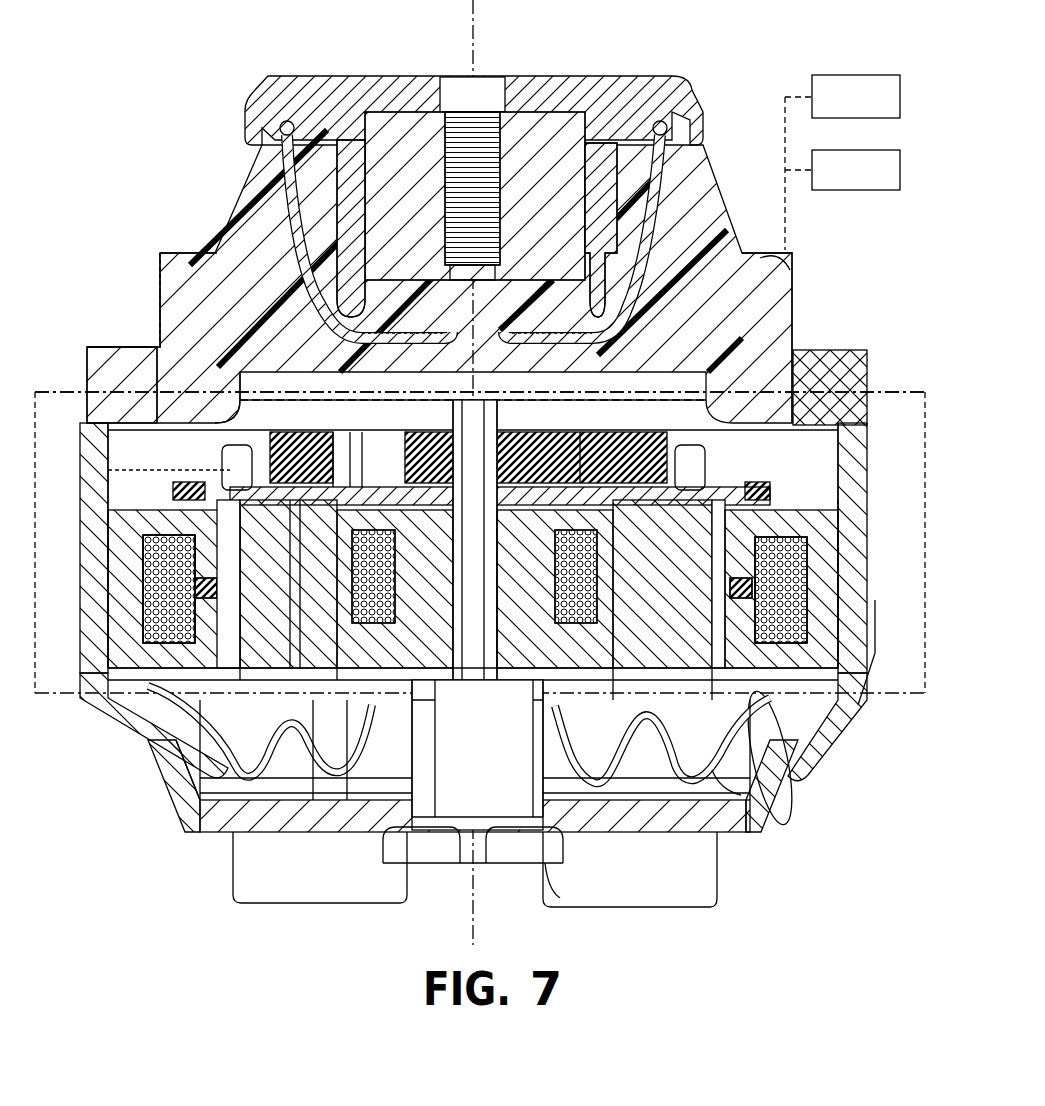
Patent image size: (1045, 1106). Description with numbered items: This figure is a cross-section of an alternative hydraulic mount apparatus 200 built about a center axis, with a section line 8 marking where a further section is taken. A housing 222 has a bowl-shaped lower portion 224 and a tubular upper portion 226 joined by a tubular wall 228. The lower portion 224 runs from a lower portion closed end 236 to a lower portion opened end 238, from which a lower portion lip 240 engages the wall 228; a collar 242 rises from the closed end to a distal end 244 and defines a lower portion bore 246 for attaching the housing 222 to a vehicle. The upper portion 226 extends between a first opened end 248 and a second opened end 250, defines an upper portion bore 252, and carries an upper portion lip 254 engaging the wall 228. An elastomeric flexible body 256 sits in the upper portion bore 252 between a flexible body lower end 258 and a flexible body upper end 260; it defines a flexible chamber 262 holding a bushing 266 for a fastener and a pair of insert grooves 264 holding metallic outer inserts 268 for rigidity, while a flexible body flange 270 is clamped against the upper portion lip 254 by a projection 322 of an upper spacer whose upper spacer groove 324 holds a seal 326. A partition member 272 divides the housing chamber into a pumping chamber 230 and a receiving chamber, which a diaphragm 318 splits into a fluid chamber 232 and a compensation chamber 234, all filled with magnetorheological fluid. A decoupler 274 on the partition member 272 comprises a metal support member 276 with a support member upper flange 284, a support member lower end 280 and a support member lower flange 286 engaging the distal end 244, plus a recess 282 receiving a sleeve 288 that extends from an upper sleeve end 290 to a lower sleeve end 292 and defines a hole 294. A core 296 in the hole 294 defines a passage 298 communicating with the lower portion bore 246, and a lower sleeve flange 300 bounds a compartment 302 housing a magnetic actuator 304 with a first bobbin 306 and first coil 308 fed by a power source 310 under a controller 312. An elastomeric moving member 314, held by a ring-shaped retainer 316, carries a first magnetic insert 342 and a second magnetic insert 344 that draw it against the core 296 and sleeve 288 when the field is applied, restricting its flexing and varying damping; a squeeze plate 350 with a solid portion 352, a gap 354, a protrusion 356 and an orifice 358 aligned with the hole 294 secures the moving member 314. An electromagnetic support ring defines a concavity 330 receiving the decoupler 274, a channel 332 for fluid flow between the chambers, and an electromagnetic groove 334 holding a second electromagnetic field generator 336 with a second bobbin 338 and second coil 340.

The brake actuator assembly 200 is at (178, 100).
The flexible body upper end 260 is at (255, 105).
The bushing 266 is at (405, 110).
The outer inserts 268 is at (280, 126).
The flexible chamber 262 is at (600, 160).
The insert grooves 264 is at (298, 185).
The first opened end 248 is at (170, 252).
The flexible body 256 is at (232, 243).
The upper portion 226 is at (158, 300).
The upper portion bore 252 is at (787, 277).
The pumping chamber 230 is at (790, 328).
The projection 322 is at (863, 352).
The section line 8 is at (883, 390).
The upper portion lip 254 is at (117, 405).
The second opened end 250 is at (172, 385).
The housing 222 is at (78, 398).
The flexible body lower end 258 is at (230, 412).
The squeeze plate 350 is at (305, 430).
The solid portion 352 is at (645, 432).
The orifice 358 is at (400, 470).
The gap 354 is at (560, 470).
The flexible body flange 270 is at (128, 432).
The partition member 272 is at (122, 473).
The wall 228 is at (97, 520).
The upper spacer groove 324 is at (183, 488).
The retainer 316 is at (227, 470).
The first magnetic insert 342 is at (320, 432).
The second magnetic insert 344 is at (430, 470).
The magnetic actuator 304 is at (545, 480).
The moving member 314 is at (590, 470).
The upper sleeve end 290 is at (350, 492).
The compartment 302 is at (385, 495).
The support member upper flange 284 is at (688, 460).
The seal 326 is at (765, 495).
The channel 332 is at (215, 525).
The electromagnetic groove 334 is at (148, 575).
The first coil 308 is at (292, 600).
The first bobbin 306 is at (393, 598).
The distal end 244 is at (440, 668).
The passage 298 is at (495, 560).
The hole 294 is at (660, 625).
The sleeve 288 is at (728, 560).
The concavity 330 is at (812, 592).
The second coil 340 is at (800, 630).
The protrusion 356 is at (690, 525).
The decoupler 274 is at (120, 667).
The support member lower end 280 is at (300, 652).
The lower portion lip 240 is at (115, 718).
The second electromagnetic field generator 336 is at (843, 733).
The second bobbin 338 is at (873, 695).
The fluid chamber 232 is at (812, 745).
The compensation chamber 234 is at (790, 800).
The lower portion opened end 238 is at (135, 740).
The recess 282 is at (760, 705).
The support member 276 is at (665, 660).
The lower sleeve flange 300 is at (430, 705).
The core 296 is at (490, 695).
The lower portion bore 246 is at (553, 732).
The lower portion closed end 236 is at (203, 820).
The lower portion 224 is at (178, 792).
The collar 242 is at (390, 800).
The lower sleeve end 292 is at (315, 690).
The support member lower flange 286 is at (347, 700).
The diaphragm 318 is at (712, 770).
The power source 310 is at (900, 82).
The controller 312 is at (900, 156).